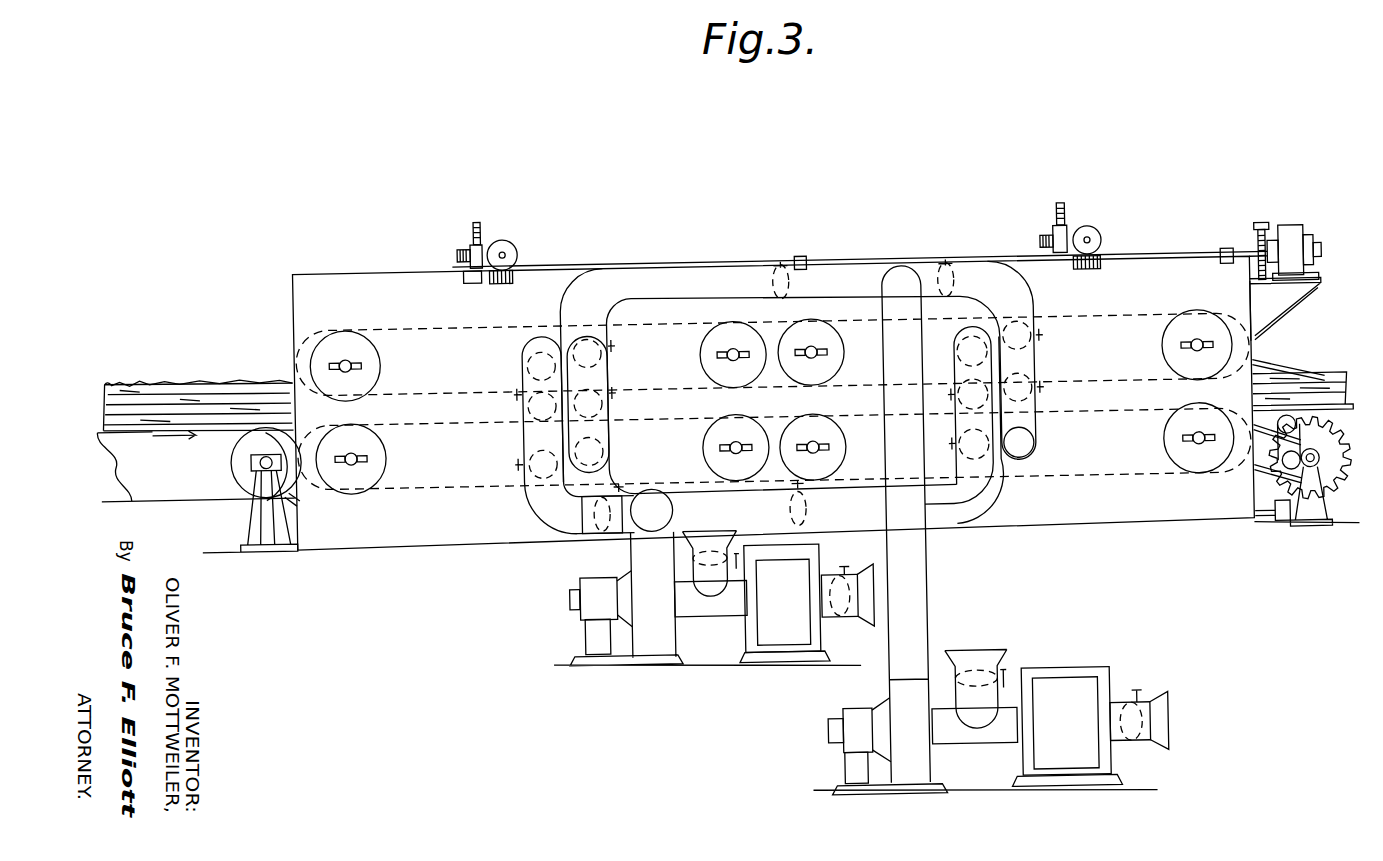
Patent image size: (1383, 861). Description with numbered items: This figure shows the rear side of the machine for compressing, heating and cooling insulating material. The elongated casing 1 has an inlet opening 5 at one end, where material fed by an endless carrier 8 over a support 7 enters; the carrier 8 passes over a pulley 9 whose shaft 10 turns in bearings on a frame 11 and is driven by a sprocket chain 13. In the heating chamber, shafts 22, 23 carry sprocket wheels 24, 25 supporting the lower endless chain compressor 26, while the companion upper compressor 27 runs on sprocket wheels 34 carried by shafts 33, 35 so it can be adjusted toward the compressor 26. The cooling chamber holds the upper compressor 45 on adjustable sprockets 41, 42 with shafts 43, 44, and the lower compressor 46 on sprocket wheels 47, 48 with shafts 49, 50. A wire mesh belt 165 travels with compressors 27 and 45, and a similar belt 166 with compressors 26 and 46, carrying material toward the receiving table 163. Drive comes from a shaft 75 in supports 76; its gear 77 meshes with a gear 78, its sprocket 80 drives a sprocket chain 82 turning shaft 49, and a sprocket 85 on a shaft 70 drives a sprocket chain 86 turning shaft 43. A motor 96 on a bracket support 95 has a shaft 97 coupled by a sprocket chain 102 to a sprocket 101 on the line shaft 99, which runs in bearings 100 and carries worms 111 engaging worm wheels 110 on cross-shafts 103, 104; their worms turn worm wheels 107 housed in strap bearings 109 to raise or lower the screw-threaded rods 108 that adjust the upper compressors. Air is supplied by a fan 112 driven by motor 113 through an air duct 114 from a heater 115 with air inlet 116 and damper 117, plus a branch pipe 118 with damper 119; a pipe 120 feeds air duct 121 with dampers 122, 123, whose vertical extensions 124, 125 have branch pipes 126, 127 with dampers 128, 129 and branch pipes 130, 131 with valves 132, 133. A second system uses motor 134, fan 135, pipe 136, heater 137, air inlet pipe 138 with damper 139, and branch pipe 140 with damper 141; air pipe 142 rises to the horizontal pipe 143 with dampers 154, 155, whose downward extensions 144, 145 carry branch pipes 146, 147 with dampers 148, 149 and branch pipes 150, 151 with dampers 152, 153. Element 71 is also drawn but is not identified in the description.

The casing 1 is at (383, 277).
The inlet opening 5 is at (295, 368).
The support 7 is at (289, 419).
The endless carrier 8 is at (195, 465).
The pulley 9 is at (238, 456).
The shaft 10 is at (265, 446).
The frame 11 is at (250, 518).
The sprocket chain 13 is at (291, 502).
The shaft 22 is at (735, 447).
The shaft 23 is at (350, 458).
The sprocket wheel 24 is at (704, 445).
The sprocket wheel 25 is at (385, 446).
The endless chain compressing member 26 is at (442, 483).
The companion compressor 27 is at (440, 393).
The shaft 33 is at (732, 353).
The sprocket wheels 34 is at (687, 371).
The shaft 35 is at (345, 365).
The adjustable sprocket 41 is at (1165, 325).
The adjustable sprocket 42 is at (826, 352).
The shaft 43 is at (1185, 350).
The shaft 44 is at (822, 356).
The upper chain compressor 45 is at (1057, 310).
The lower compressor 46 is at (1100, 430).
The sprocket wheels 47 is at (1163, 446).
The sprocket wheels 48 is at (846, 440).
The shaft 49 is at (1185, 442).
The shaft 50 is at (812, 447).
The shaft 70 is at (1282, 531).
The discharge bracket 71 is at (1254, 531).
The shaft 75 is at (1312, 482).
The supports 76 is at (1273, 512).
The gear 77 is at (1262, 472).
The gear 78 is at (1310, 382).
The sprocket 80 is at (1278, 440).
The sprocket chain 82 is at (1253, 436).
The sprocket 85 is at (1253, 405).
The sprocket chain 86 is at (1266, 370).
The bracket support 95 is at (1292, 318).
The motor 96 is at (1294, 240).
The motor shaft 97 is at (1324, 258).
The line shaft 99 is at (583, 263).
The bearings 100 is at (467, 277).
The sprocket 101 is at (1260, 250).
The sprocket chain 102 is at (1265, 232).
The cross-shaft 103 is at (1092, 244).
The cross-shaft 104 is at (506, 248).
The worm wheels 107 is at (460, 250).
The screw-threaded rod 108 is at (480, 217).
The strap bearings 109 is at (473, 246).
The worm wheel 110 is at (521, 248).
The worms 111 is at (504, 280).
The combined suction and blow fan 112 is at (651, 652).
The motor 113 is at (575, 590).
The air duct 114 is at (696, 615).
The heater 115 is at (778, 652).
The air inlet 116 is at (858, 576).
The damper 117 is at (841, 568).
The branch pipe 118 is at (686, 561).
The damper 119 is at (737, 568).
The pipe 120 is at (620, 532).
The air duct 121 is at (660, 492).
The damper 122 is at (617, 484).
The damper 123 is at (800, 494).
The vertical extension 124 is at (522, 370).
The vertical extension 125 is at (1003, 472).
The branch pipe 126 is at (525, 440).
The branch pipe 127 is at (525, 345).
The damper 128 is at (514, 390).
The damper 129 is at (514, 460).
The branch pipe 130 is at (960, 442).
The branch pipe 131 is at (958, 350).
The valve 132 is at (951, 392).
The valve 133 is at (948, 450).
The motor 134 is at (840, 716).
The fan 135 is at (926, 750).
The pipe 136 is at (994, 740).
The heater 137 is at (1102, 752).
The air inlet pipe 138 is at (1158, 702).
The damper 139 is at (1131, 697).
The branch pipe 140 is at (1000, 660).
The damper 141 is at (1002, 680).
The air pipe 142 is at (925, 582).
The horizontally-disposed pipe 143 is at (696, 279).
The downward extension 144 is at (610, 373).
The downward extension 145 is at (1038, 362).
The branch pipe 146 is at (612, 343).
The branch pipe 147 is at (605, 440).
The damper 148 is at (614, 390).
The damper 149 is at (615, 355).
The branch pipe 150 is at (1032, 336).
The branch pipe 151 is at (1034, 451).
The damper 152 is at (1044, 392).
The damper 153 is at (1045, 340).
The damper 154 is at (781, 262).
The damper 155 is at (946, 264).
The receiving table 163 is at (1330, 428).
The endless wire mesh belt 165 is at (764, 351).
The wire mesh belt 166 is at (500, 498).